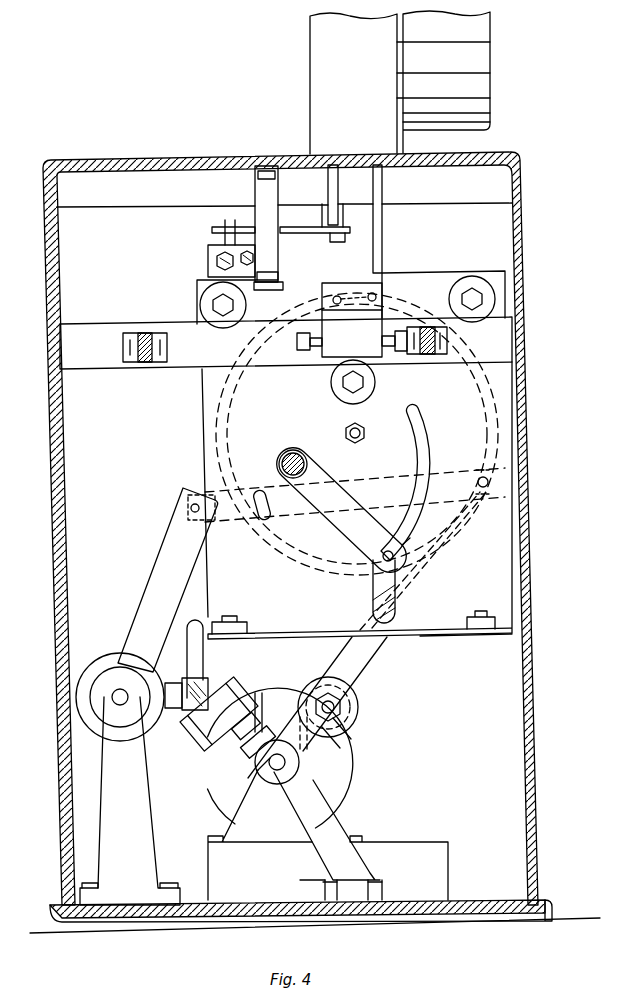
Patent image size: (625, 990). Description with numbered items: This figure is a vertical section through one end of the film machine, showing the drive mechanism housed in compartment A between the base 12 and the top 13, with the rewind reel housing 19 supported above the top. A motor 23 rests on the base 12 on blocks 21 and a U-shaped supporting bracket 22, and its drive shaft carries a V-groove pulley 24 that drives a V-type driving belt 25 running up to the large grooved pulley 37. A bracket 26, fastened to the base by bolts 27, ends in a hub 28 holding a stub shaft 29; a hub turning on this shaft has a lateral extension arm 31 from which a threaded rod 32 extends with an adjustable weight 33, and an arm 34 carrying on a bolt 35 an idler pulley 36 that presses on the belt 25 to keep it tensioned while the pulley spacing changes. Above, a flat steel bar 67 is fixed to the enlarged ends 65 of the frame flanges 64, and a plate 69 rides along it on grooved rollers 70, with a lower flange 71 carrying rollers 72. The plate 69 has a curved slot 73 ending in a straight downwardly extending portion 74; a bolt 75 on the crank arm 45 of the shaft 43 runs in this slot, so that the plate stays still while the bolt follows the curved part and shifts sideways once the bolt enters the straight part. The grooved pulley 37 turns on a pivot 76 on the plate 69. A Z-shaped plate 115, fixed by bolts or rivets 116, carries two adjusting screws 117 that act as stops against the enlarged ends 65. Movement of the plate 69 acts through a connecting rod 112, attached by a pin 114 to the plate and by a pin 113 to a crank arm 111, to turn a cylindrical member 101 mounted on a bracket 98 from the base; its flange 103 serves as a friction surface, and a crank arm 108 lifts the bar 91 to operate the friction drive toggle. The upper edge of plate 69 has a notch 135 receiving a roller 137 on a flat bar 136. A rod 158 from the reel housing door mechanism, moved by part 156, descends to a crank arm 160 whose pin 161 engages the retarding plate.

The base 12 is at (228, 922).
The top 13 is at (224, 153).
The rewind reel housing 19 is at (483, 52).
The blocks 21 is at (440, 869).
The U-shaped supporting bracket 22 is at (260, 835).
The motor 23 is at (280, 758).
The V-groove pulley 24 is at (248, 760).
The V-type driving belt 25 is at (340, 655).
The bracket 26 is at (303, 806).
The bolts 27 is at (320, 883).
The hub 28 is at (276, 785).
The stub shaft 29 is at (262, 766).
The lateral extension arm 31 is at (270, 712).
The threaded rod 32 is at (242, 737).
The weight 33 is at (203, 735).
The arm 34 is at (344, 738).
The bolt or shaft 35 is at (340, 707).
The idler pulley 36 is at (344, 690).
The grooved pulley 37 is at (298, 563).
The shaft 43 is at (307, 457).
The crank arm 45 is at (328, 520).
The flanges 64 is at (146, 362).
The enlarged ends 65 is at (130, 362).
The flat steel bar 67 is at (286, 343).
The plate 69 is at (357, 466).
The grooved rollers 70 is at (200, 296).
The flange 71 is at (440, 638).
The rollers 72 is at (248, 624).
The curved slot 73 is at (428, 447).
The straight downwardly extending portion 74 is at (373, 596).
The bolt 75 is at (405, 538).
The pivot 76 is at (360, 427).
The bar 91 is at (203, 676).
The bracket 98 is at (130, 801).
The cylindrical member 101 is at (108, 665).
The flange 103 is at (98, 730).
The crank arm 108 is at (186, 668).
The crank arm 111 is at (165, 543).
The connecting rod 112 is at (262, 488).
The pin 113 is at (190, 504).
The pin 114 is at (484, 490).
The Z-shaped plate 115 is at (352, 320).
The bolts or rivets 116 is at (378, 295).
The adjusting screws 117 is at (297, 342).
The notch 135 is at (256, 290).
The flat bar 136 is at (258, 272).
The roller 137 is at (280, 285).
The part 156 is at (350, 230).
The rod 158 is at (328, 185).
The crank arm 160 is at (253, 212).
The pin 161 is at (212, 240).
The compartment A is at (454, 717).